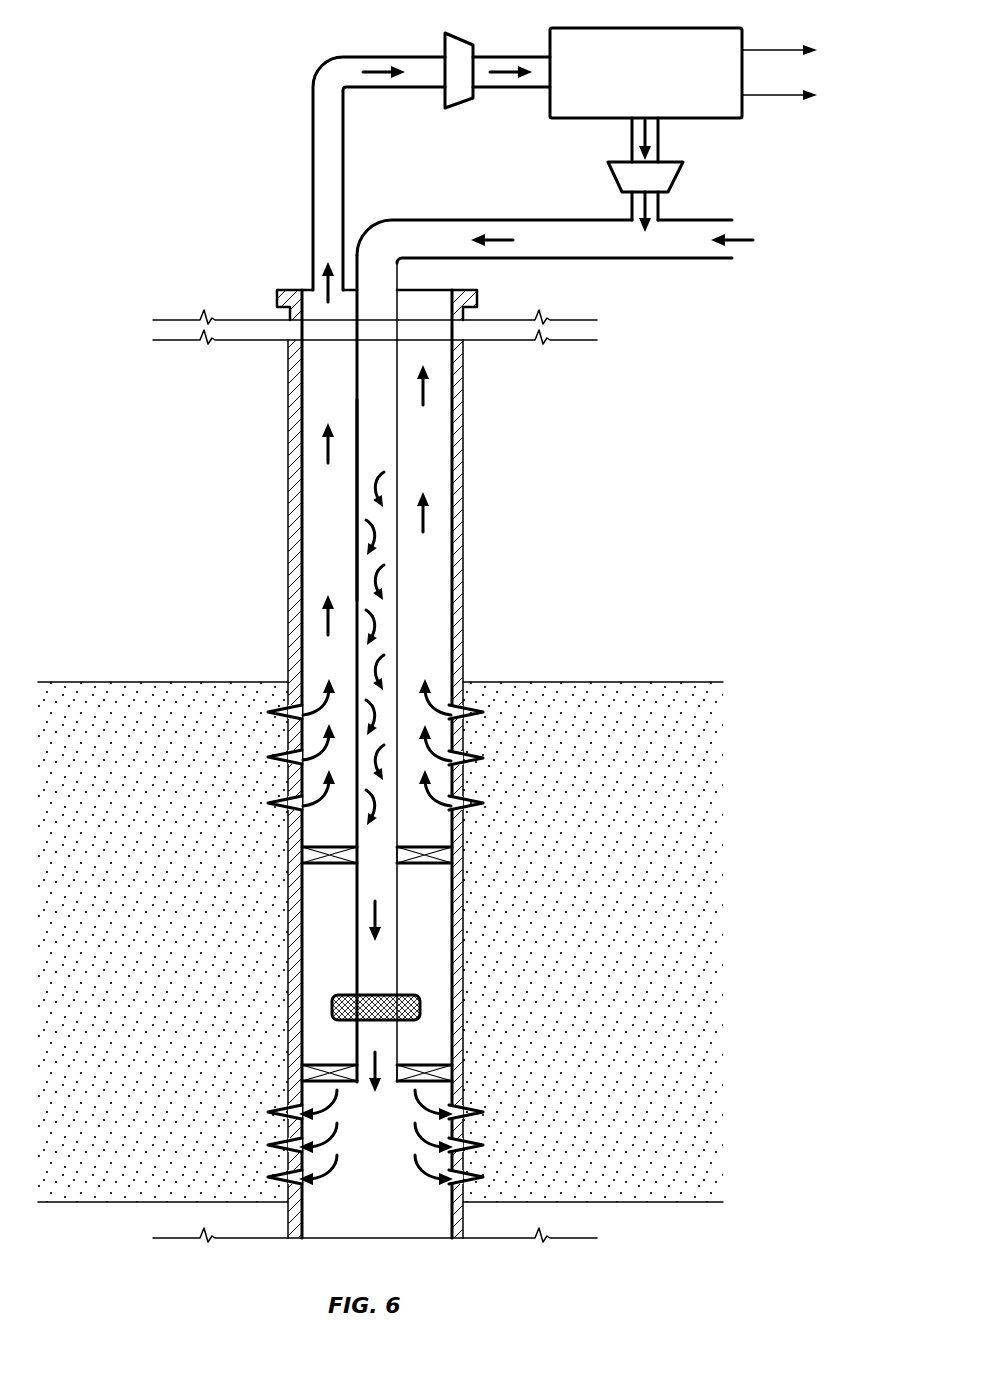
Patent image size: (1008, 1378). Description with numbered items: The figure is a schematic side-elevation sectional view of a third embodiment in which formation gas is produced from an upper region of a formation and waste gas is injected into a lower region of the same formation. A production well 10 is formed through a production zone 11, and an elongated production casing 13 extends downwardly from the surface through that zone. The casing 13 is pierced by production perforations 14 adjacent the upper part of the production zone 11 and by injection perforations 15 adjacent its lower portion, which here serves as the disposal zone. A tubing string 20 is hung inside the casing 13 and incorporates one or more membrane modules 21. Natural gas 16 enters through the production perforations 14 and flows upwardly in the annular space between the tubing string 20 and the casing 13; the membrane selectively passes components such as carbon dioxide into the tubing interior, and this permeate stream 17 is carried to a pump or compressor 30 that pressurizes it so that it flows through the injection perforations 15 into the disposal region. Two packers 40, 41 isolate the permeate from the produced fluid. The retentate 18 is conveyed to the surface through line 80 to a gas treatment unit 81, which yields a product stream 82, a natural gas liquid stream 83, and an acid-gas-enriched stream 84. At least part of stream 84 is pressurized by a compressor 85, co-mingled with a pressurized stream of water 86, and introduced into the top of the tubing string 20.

The production well 10 is at (481, 384).
The production zone 11 is at (594, 956).
The production casing 13 is at (288, 583).
The production perforations 14 is at (288, 800).
The injection perforations 15 is at (288, 1146).
The natural gas 16 is at (300, 735).
The CO2-enriched permeate stream 17 is at (375, 575).
The retentate 18 is at (328, 448).
The tubing string 20 is at (357, 390).
The membrane module 21 is at (357, 503).
The pump or compressor 30 is at (332, 1008).
The packer 40 is at (303, 1066).
The packer 41 is at (303, 862).
The line 80 is at (313, 119).
The gas treatment unit 81 is at (689, 28).
The product stream 82 is at (757, 50).
The natural gas liquid stream 83 is at (757, 97).
The acid gas enriched stream 84 is at (661, 135).
The compressor 85 is at (680, 183).
The water injection line 86 is at (739, 240).